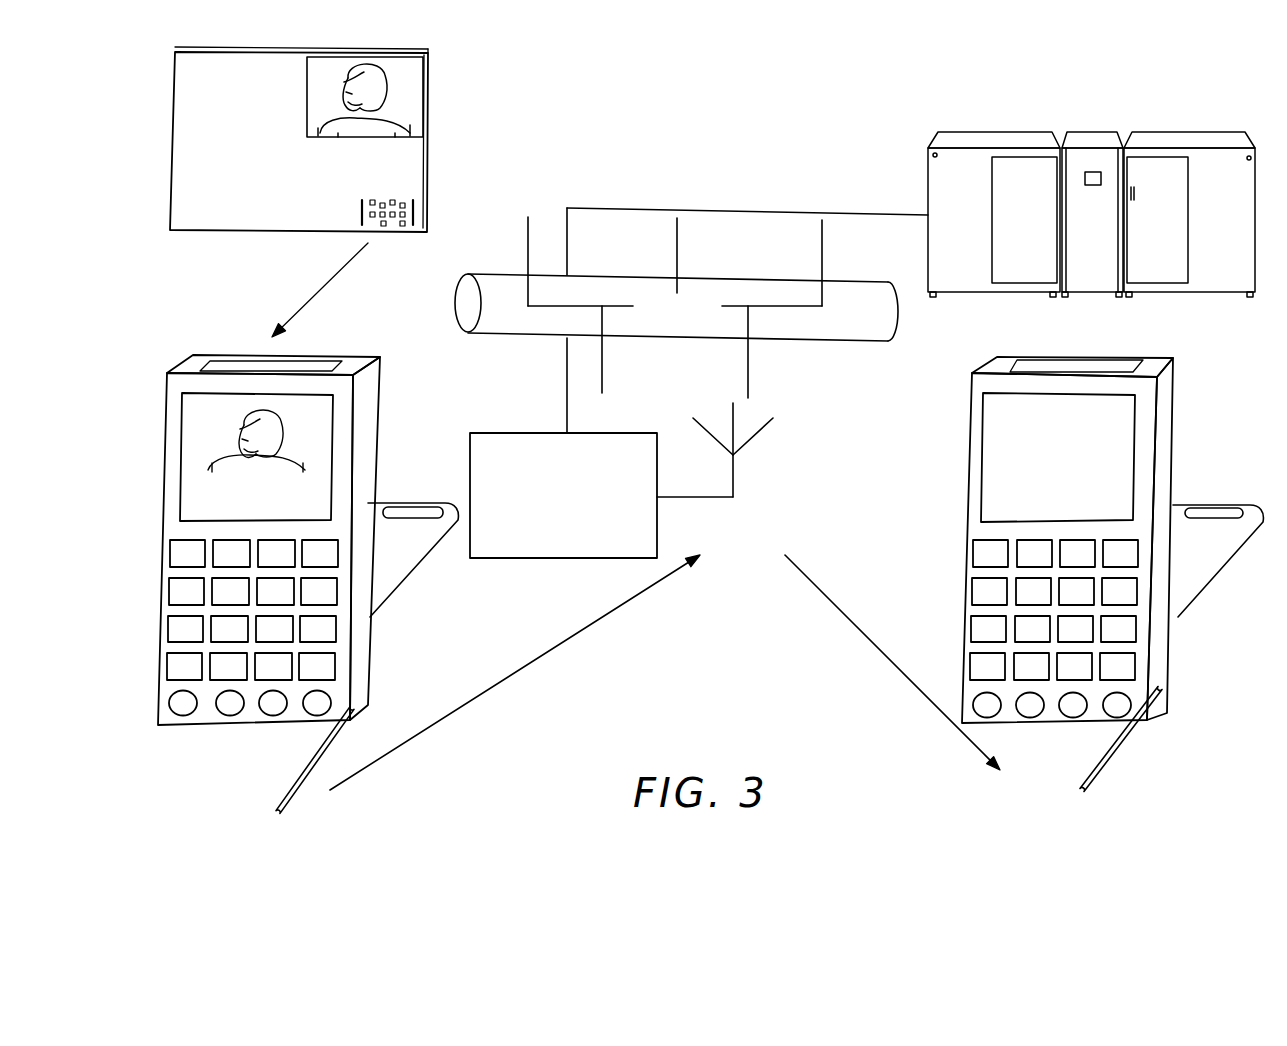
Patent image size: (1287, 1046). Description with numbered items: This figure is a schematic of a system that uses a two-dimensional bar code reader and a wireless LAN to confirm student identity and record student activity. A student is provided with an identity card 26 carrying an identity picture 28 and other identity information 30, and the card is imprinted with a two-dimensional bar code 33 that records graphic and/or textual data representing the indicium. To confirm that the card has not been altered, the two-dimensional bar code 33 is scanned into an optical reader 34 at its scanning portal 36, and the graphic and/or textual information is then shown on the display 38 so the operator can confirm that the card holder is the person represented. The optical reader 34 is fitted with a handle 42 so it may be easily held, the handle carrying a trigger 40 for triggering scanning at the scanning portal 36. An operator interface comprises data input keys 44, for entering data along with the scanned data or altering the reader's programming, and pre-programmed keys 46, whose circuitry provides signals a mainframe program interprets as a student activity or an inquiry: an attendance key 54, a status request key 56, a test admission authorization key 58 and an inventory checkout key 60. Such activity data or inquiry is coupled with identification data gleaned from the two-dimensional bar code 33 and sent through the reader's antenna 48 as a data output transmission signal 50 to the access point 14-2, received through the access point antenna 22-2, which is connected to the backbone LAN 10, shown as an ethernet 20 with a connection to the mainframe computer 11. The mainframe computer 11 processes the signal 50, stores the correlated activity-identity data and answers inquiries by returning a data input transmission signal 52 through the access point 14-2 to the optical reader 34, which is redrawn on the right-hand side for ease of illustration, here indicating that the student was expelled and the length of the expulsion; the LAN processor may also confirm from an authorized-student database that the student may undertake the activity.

The backbone LAN 10 is at (623, 168).
The mainframe computer 11 is at (1018, 132).
The access point 14-2 is at (490, 433).
The ethernet 20 is at (523, 276).
The access point antenna 22-2 is at (733, 478).
The identity card 26 is at (457, 127).
The identity picture 28 is at (408, 77).
The identity information 30 is at (275, 229).
The two-dimensional bar code 33 is at (390, 232).
The optical reader 34 is at (193, 357).
The scanning portal 36 is at (297, 365).
The display 38 is at (335, 405).
The trigger 40 is at (427, 498).
The handle 42 is at (420, 562).
The data input keys 44 is at (354, 646).
The pre-programmed keys 46 is at (351, 695).
The antenna 48 is at (285, 787).
The data output transmission signal 50 is at (564, 645).
The data input transmission signal 52 is at (888, 663).
The attendance key 54 is at (183, 716).
The status request key 56 is at (230, 716).
The test admission authorization key 58 is at (273, 716).
The inventory checkout key 60 is at (317, 716).